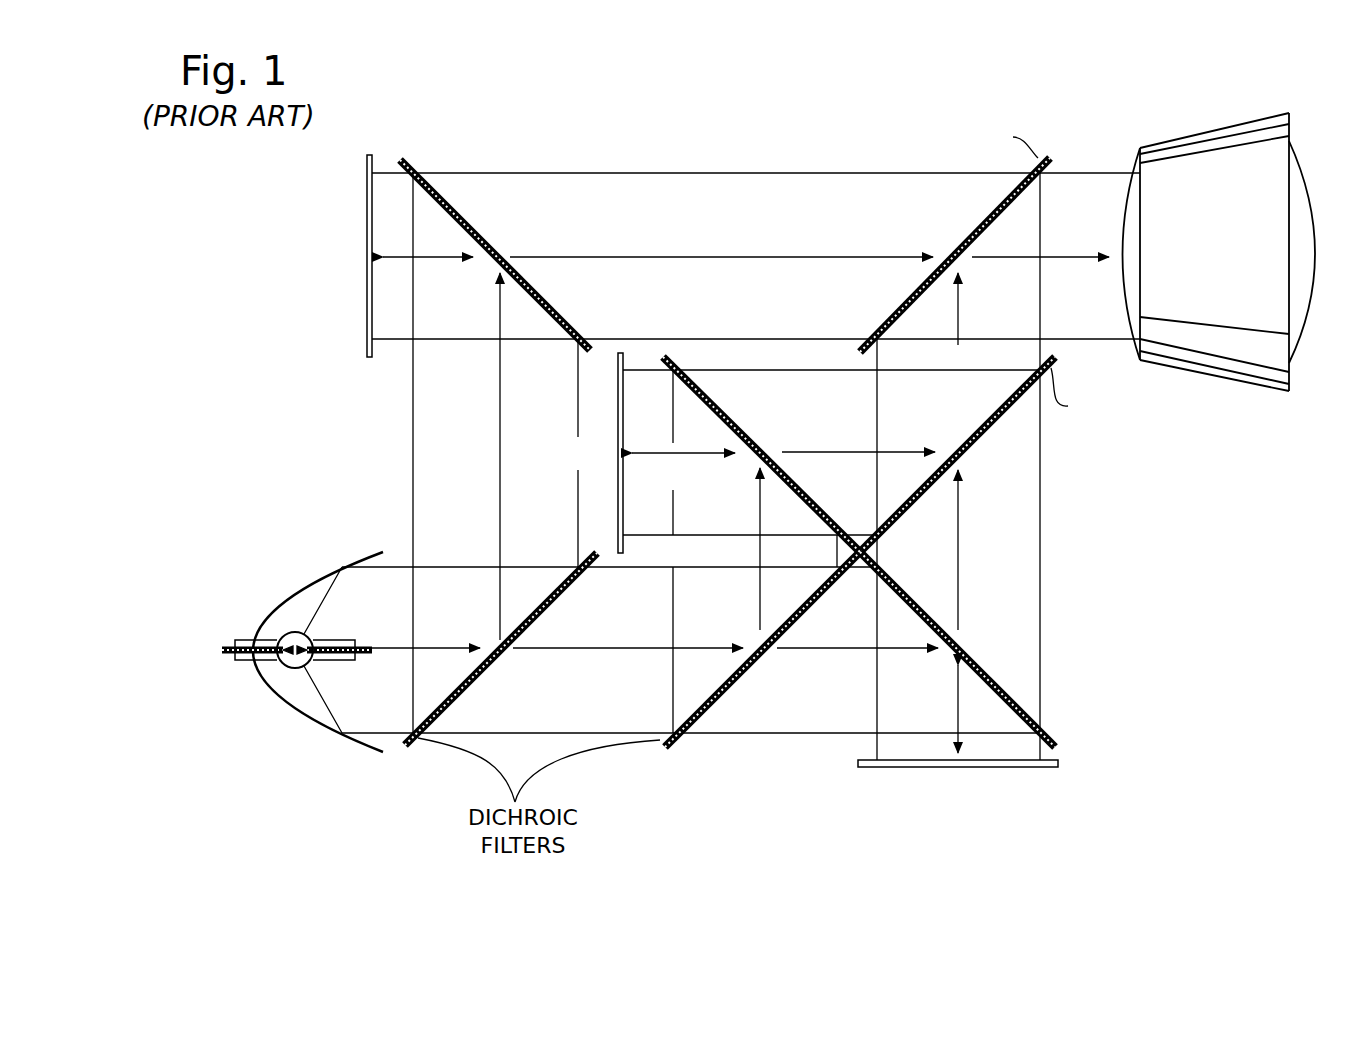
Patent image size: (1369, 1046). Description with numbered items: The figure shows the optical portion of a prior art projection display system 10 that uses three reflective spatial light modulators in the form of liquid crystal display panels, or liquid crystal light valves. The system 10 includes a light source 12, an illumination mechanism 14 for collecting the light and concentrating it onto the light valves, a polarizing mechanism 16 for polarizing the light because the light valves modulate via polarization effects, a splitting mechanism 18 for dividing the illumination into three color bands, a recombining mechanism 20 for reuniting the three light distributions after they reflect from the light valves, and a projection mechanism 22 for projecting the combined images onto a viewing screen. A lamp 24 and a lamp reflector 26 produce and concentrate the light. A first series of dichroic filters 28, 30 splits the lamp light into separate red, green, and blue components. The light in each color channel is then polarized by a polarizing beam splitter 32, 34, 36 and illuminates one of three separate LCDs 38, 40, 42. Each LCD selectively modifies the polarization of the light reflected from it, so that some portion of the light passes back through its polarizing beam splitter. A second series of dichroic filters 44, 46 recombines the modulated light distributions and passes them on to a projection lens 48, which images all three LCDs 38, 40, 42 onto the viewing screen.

The prior art system 10 is at (415, 891).
The light source 12 is at (220, 740).
The illumination mechanism 14 is at (699, 79).
The polarizing mechanism 16 is at (1163, 577).
The splitting mechanism 18 is at (650, 812).
The recombining mechanism 20 is at (894, 192).
The projection mechanism 22 is at (1217, 417).
The lamp 24 is at (340, 662).
The lamp reflector 26 is at (287, 595).
The dichroic filter 28 is at (483, 672).
The dichroic filter 30 is at (806, 608).
The polarizing beam splitter 32 is at (474, 224).
The polarizing beam splitter 34 is at (730, 413).
The polarizing beam splitter 36 is at (988, 673).
The LCD 38 is at (365, 313).
The LCD 40 is at (616, 380).
The LCD 42 is at (1027, 768).
The dichroic filter 44 is at (991, 422).
The dichroic filter 46 is at (1003, 206).
The projection lens 48 is at (1305, 331).